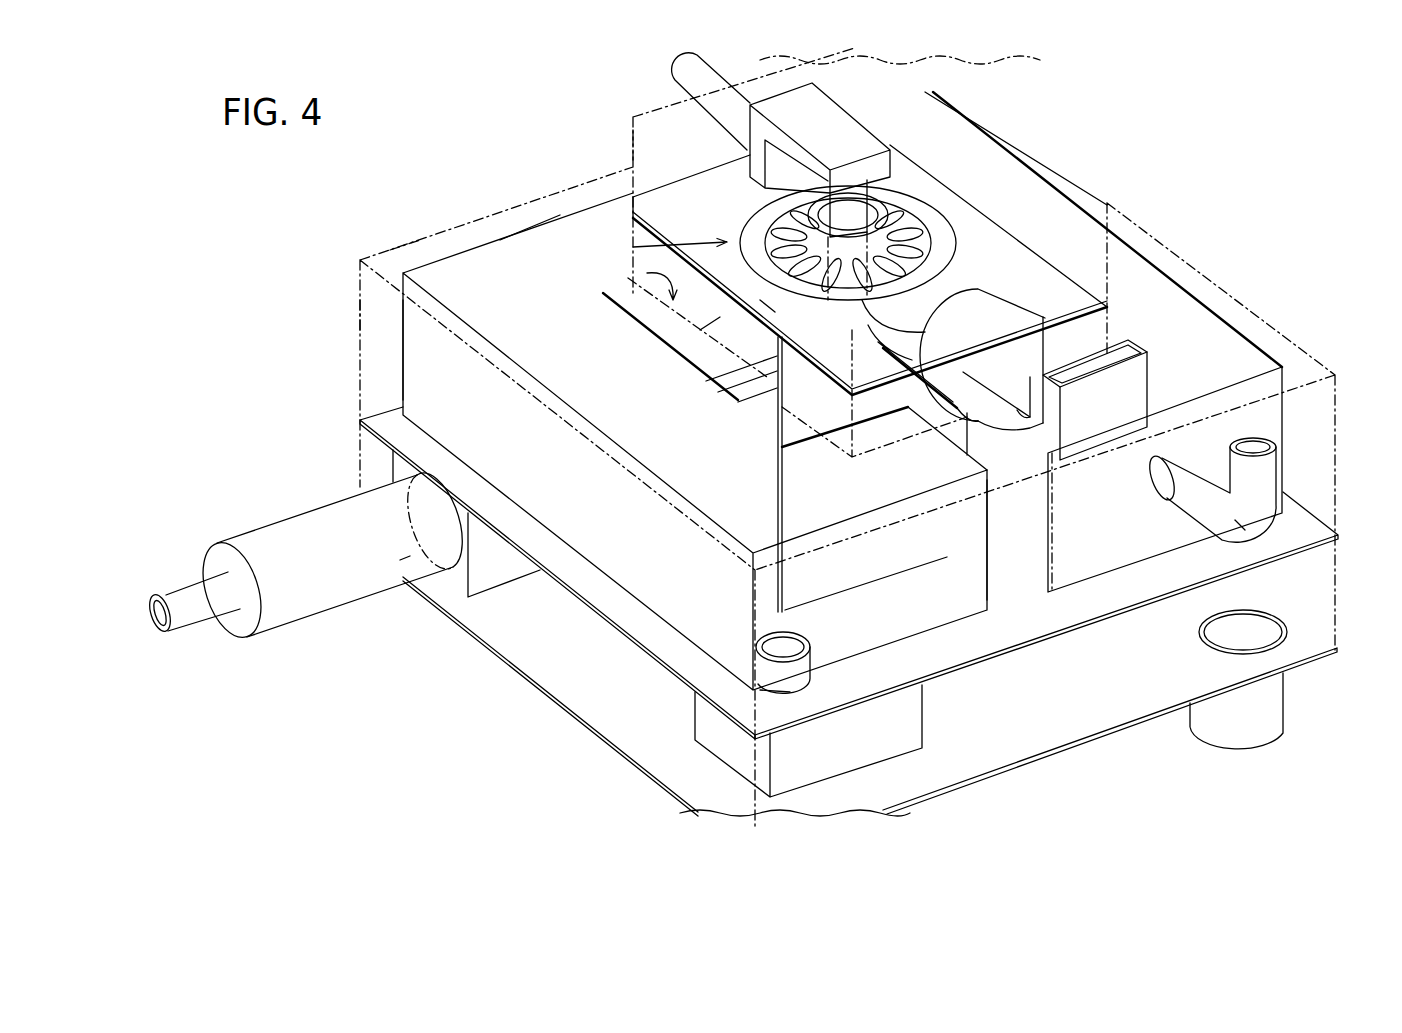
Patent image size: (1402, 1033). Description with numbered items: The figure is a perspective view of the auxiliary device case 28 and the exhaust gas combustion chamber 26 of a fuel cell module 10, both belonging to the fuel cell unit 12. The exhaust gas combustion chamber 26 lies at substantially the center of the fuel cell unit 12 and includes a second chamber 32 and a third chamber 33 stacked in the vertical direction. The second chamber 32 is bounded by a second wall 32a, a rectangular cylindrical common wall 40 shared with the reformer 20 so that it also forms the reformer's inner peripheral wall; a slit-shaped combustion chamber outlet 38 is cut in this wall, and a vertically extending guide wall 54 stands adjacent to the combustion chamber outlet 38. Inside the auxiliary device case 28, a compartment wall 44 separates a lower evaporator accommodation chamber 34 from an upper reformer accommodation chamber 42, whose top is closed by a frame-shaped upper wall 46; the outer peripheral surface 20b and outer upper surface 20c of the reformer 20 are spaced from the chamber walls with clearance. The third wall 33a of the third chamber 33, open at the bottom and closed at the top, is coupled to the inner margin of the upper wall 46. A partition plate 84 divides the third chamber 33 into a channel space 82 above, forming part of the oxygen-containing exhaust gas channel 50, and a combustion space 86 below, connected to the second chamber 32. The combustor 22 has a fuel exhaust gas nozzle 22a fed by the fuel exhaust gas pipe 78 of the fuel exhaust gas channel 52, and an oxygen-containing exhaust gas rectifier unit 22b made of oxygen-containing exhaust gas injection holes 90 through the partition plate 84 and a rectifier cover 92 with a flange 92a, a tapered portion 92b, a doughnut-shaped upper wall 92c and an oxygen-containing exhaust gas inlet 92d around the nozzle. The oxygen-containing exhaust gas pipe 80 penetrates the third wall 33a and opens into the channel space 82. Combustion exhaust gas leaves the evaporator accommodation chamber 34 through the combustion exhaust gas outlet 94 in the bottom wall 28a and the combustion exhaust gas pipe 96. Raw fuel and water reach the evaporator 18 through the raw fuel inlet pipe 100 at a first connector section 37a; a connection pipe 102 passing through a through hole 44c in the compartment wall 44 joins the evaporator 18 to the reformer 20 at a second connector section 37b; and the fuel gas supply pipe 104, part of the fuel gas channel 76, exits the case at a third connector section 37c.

The fuel cell module 10 is at (1352, 90).
The fuel cell unit 12 is at (1224, 151).
The evaporator 18 is at (708, 718).
The reformer 20 is at (447, 258).
The outer peripheral surface 20b is at (423, 360).
The outer upper surface 20c is at (522, 262).
The combustor 22 is at (573, 230).
The fuel exhaust gas nozzle 22a is at (720, 217).
The oxygen-containing exhaust gas rectifier unit 22b is at (690, 265).
The exhaust gas combustion chamber 26 is at (690, 262).
The auxiliary device case 28 is at (1197, 262).
The bottom wall 28a is at (1078, 748).
The second chamber 32 is at (1328, 429).
The second wall 32a is at (650, 310).
The third chamber 33 is at (913, 158).
The third wall 33a is at (633, 145).
The evaporator accommodation chamber 34 is at (545, 661).
The first connector section 37a is at (416, 546).
The second connector section 37b is at (819, 627).
The third connector section 37c is at (1211, 516).
The combustion chamber outlet 38 is at (1030, 550).
The common wall 40 is at (652, 340).
The reformer accommodation chamber 42 is at (373, 317).
The compartment wall 44 is at (1300, 515).
The through hole 44c is at (793, 683).
The upper wall 46 is at (407, 258).
The oxygen-containing exhaust gas channel 50 is at (1049, 374).
The fuel exhaust gas channel 52 is at (727, 176).
The guide wall 54 is at (772, 420).
The fuel gas channel 76 is at (1246, 529).
The fuel exhaust gas pipe 78 is at (683, 77).
The oxygen-containing exhaust gas pipe 80 is at (1133, 357).
The channel space 82 is at (1094, 272).
The partition plate 84 is at (767, 308).
The combustion space 86 is at (700, 325).
The oxygen-containing exhaust gas injection holes 90 is at (940, 240).
The rectifier cover 92 is at (1148, 63).
The flange 92a is at (910, 228).
The tapered portion 92b is at (860, 235).
The upper wall 92c is at (870, 210).
The oxygen-containing exhaust gas inlet 92d is at (890, 197).
The combustion exhaust gas outlet 94 is at (1262, 630).
The combustion exhaust gas pipe 96 is at (1233, 735).
The raw fuel inlet pipe 100 is at (275, 545).
The connection pipe 102 is at (810, 678).
The fuel gas supply pipe 104 is at (1253, 440).